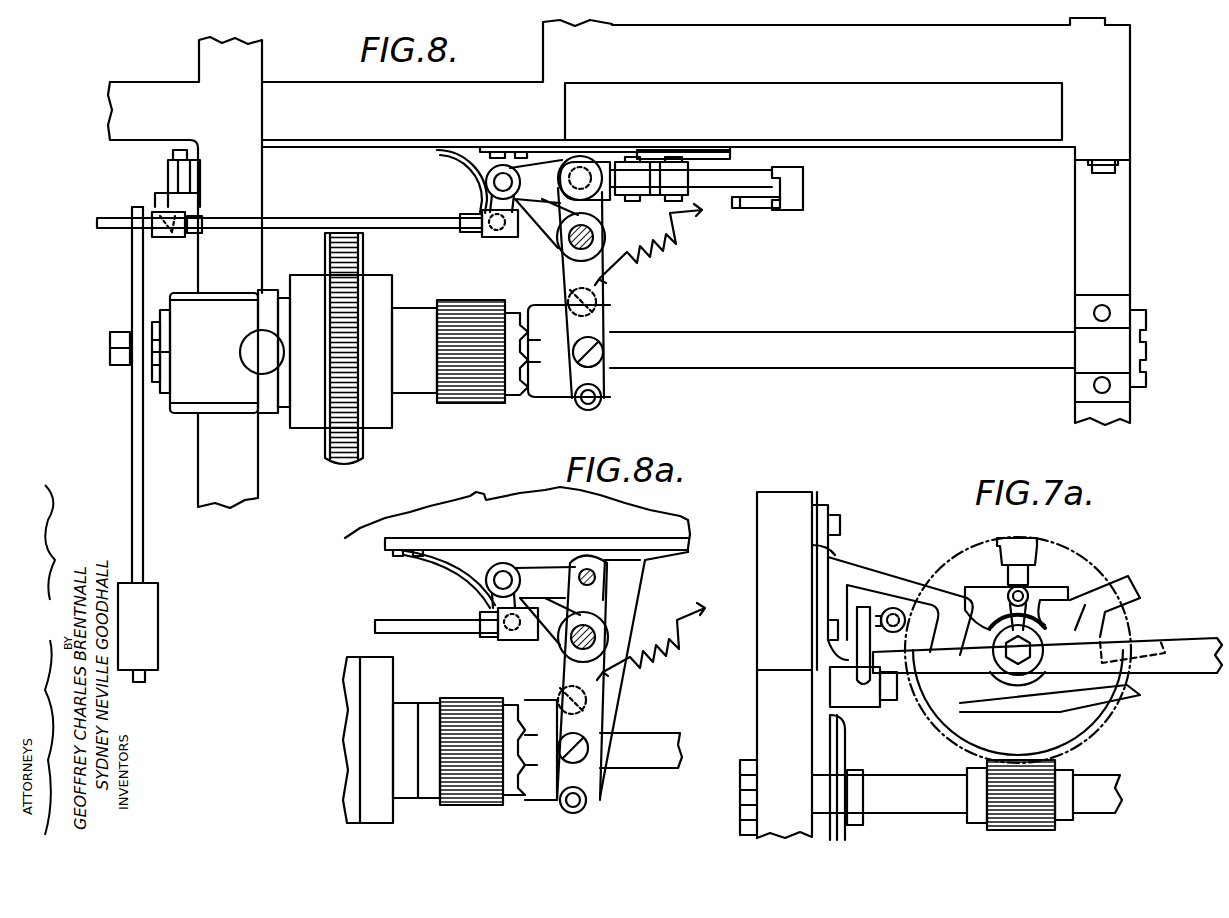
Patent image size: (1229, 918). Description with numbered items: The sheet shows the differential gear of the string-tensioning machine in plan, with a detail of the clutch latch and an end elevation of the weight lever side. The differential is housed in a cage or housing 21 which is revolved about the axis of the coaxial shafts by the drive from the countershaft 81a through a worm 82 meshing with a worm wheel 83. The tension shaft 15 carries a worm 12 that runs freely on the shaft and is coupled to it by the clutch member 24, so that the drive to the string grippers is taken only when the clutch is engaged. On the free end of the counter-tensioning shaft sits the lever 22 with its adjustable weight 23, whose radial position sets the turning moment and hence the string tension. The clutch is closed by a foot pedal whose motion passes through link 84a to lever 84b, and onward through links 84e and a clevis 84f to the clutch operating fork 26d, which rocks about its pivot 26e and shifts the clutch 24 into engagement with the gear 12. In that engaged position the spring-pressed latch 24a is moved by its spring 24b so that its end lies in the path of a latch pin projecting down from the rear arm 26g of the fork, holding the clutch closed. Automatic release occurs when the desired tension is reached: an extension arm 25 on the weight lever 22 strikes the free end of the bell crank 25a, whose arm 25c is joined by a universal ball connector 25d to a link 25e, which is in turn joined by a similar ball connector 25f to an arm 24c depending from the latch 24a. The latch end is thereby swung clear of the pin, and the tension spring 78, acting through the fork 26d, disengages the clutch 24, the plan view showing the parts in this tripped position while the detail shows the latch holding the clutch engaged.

In FIG. 8, the worm 12 is at (462, 405).
In FIG. 8A, the worm 12 is at (465, 805).
In FIG. 8, the tension shaft 15 is at (900, 342).
In FIG. 8A, the tension shaft 15 is at (642, 733).
In FIG. 8, the cage or housing 21 is at (375, 425).
In FIG. 8, the lever 22 is at (143, 536).
In FIG. 7A, the lever 22 is at (1200, 675).
In FIG. 8, the adjustable weight 23 is at (158, 612).
In FIG. 8, the clutch member 24 is at (555, 405).
In FIG. 8A, the clutch member 24 is at (548, 800).
In FIG. 8, the spring-pressed latch 24a is at (530, 165).
In FIG. 8A, the spring-pressed latch 24a is at (555, 560).
In FIG. 8, the spring 24b is at (462, 181).
In FIG. 8A, the spring 24b is at (455, 560).
In FIG. 8, the arm 24c is at (487, 188).
In FIG. 8A, the arm 24c is at (498, 598).
In FIG. 8, the extension arm 25 is at (125, 265).
In FIG. 7A, the extension arm 25 is at (935, 680).
In FIG. 8, the bell crank 25a is at (97, 222).
In FIG. 7A, the bell crank 25a is at (888, 705).
In FIG. 8, the arm 25c is at (162, 200).
In FIG. 7A, the arm 25c is at (860, 655).
In FIG. 8, the universal ball connector 25d is at (172, 238).
In FIG. 7A, the universal ball connector 25d is at (895, 606).
In FIG. 8, the link 25e is at (298, 222).
In FIG. 8A, the link 25e is at (412, 622).
In FIG. 7A, the link 25e is at (905, 612).
In FIG. 8, the ball connector 25f is at (478, 237).
In FIG. 8A, the ball connector 25f is at (513, 641).
In FIG. 8, the clutch operating fork 26d is at (610, 296).
In FIG. 8, the pivot 26e is at (570, 250).
In FIG. 8, the rear arm 26g is at (582, 156).
In FIG. 8, the tension spring 78 is at (665, 258).
In FIG. 8A, the tension spring 78 is at (670, 670).
In FIG. 7A, the countershaft 81a is at (891, 795).
In FIG. 7A, the worm 82 is at (1040, 832).
In FIG. 8, the worm wheel 83 is at (345, 463).
In FIG. 7A, the worm wheel 83 is at (1080, 560).
In FIG. 8, the link 84a is at (748, 210).
In FIG. 8, the lever 84b is at (788, 168).
In FIG. 8, the links 84e is at (660, 168).
In FIG. 8, the clevis 84f is at (600, 162).